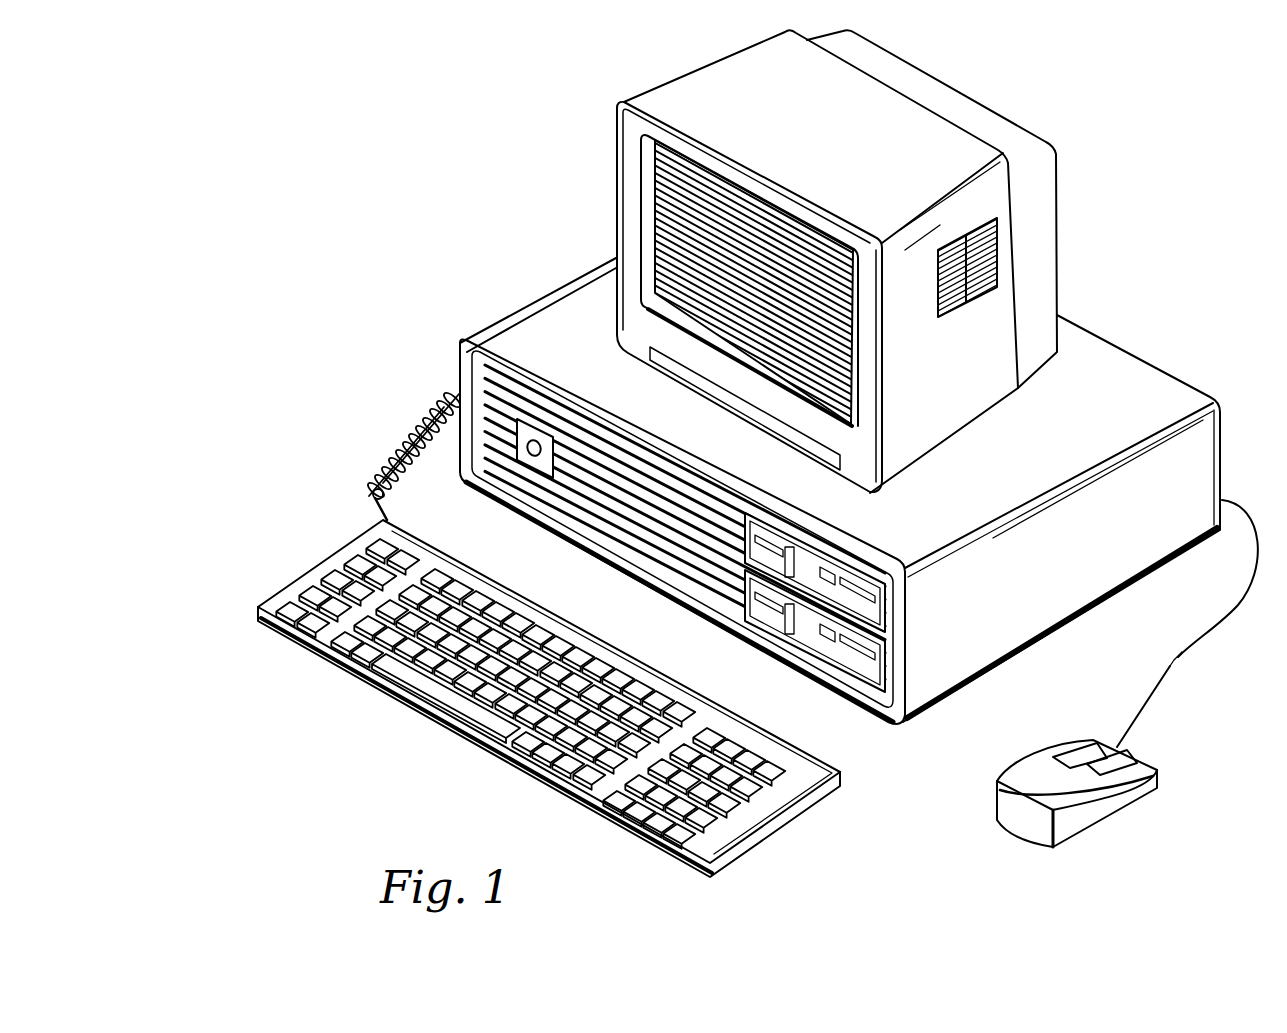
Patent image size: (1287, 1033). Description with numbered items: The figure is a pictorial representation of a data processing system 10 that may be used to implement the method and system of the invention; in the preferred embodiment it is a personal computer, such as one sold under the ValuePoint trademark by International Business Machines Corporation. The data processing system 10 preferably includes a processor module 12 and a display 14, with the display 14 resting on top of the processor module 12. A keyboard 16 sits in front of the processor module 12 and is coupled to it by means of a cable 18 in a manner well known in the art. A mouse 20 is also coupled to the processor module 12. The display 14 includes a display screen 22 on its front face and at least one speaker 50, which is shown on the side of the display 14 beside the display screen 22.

The data processing system 10 is at (518, 114).
The processor module 12 is at (1043, 596).
The display 14 is at (879, 261).
The keyboard 16 is at (647, 815).
The cable 18 is at (377, 463).
The mouse 20 is at (1073, 827).
The display screen 22 is at (757, 217).
The speaker 50 is at (945, 318).